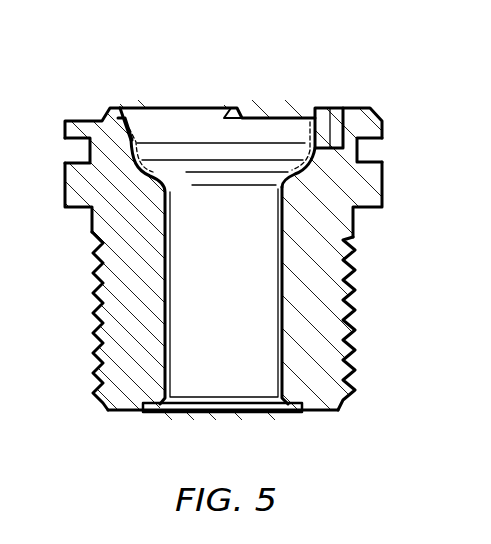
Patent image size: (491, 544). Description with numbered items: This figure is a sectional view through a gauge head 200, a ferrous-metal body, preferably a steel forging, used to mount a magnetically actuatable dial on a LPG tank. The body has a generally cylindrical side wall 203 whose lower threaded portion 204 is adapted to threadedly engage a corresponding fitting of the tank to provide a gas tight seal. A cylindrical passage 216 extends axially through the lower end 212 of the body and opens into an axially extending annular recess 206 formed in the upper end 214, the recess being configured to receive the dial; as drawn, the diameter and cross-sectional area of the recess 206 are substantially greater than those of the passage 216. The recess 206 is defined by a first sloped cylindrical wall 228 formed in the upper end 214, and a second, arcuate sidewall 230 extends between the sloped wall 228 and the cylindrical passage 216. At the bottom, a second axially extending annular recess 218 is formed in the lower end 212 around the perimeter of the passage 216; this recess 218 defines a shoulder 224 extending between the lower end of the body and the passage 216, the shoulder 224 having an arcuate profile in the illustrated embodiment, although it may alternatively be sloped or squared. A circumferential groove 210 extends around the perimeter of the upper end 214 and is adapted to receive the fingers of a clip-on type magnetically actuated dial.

The gauge head 200 is at (252, 63).
The cylindrical side wall 203 is at (355, 221).
The threaded portion 204 is at (350, 334).
The annular recess 206 is at (205, 118).
The circumferential groove 210 is at (74, 150).
The lower end 212 is at (114, 413).
The upper end 214 is at (377, 118).
The cylindrical passage 216 is at (242, 302).
The second annular recess 218 is at (150, 413).
The shoulder 224 is at (265, 401).
The first sloped cylindrical wall 228 is at (137, 133).
The arcuate sidewall 230 is at (306, 142).